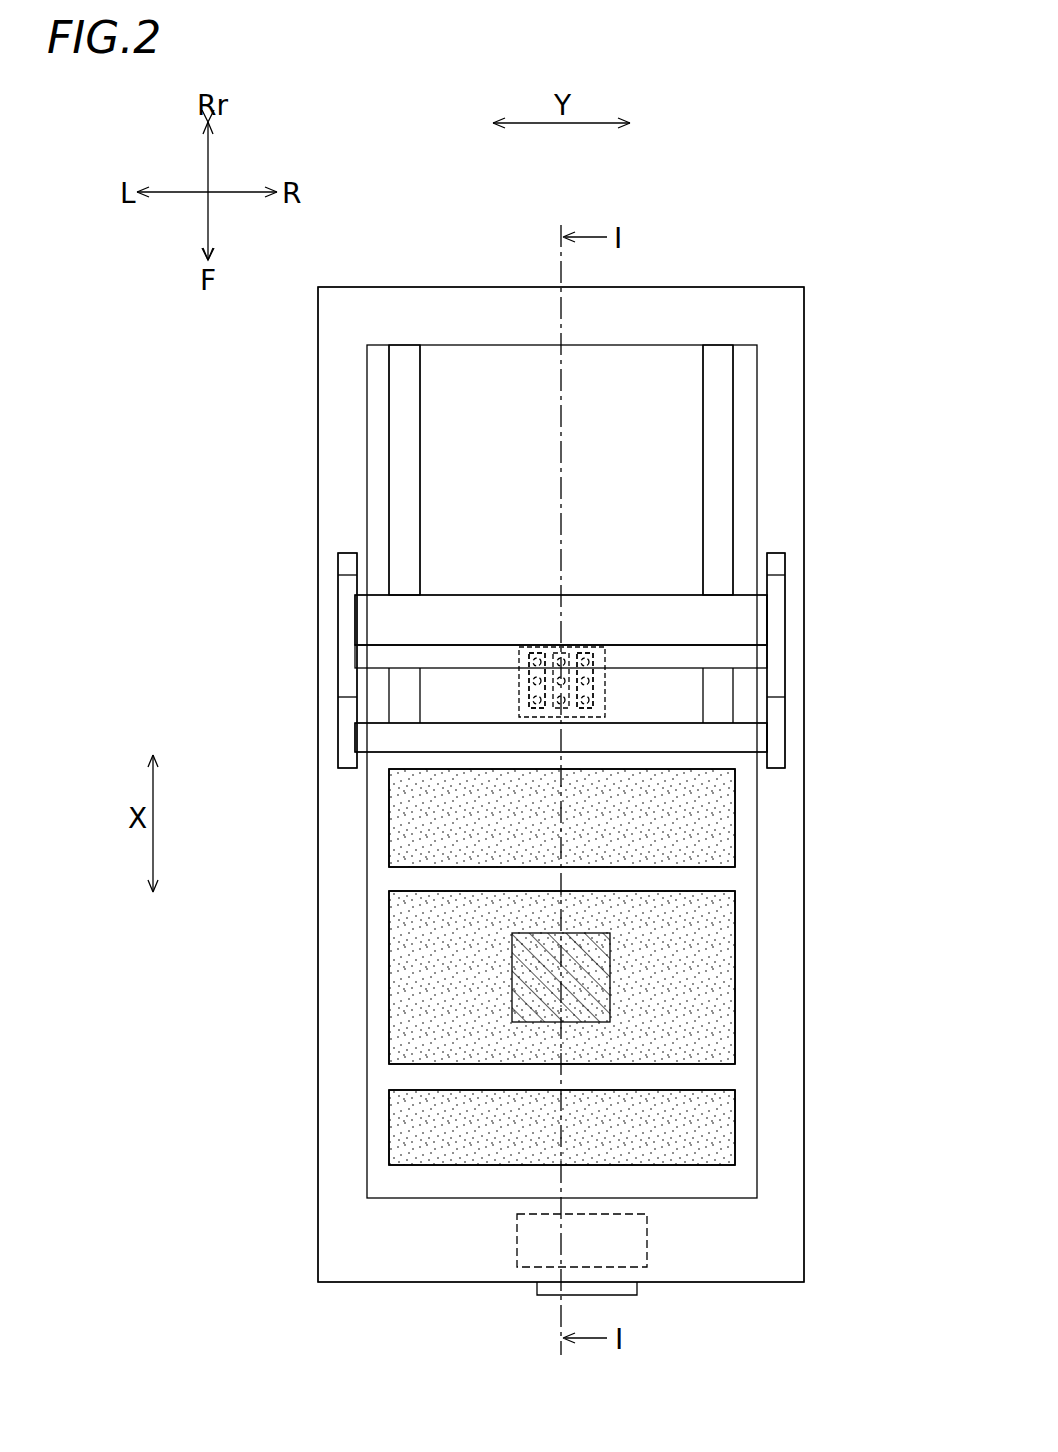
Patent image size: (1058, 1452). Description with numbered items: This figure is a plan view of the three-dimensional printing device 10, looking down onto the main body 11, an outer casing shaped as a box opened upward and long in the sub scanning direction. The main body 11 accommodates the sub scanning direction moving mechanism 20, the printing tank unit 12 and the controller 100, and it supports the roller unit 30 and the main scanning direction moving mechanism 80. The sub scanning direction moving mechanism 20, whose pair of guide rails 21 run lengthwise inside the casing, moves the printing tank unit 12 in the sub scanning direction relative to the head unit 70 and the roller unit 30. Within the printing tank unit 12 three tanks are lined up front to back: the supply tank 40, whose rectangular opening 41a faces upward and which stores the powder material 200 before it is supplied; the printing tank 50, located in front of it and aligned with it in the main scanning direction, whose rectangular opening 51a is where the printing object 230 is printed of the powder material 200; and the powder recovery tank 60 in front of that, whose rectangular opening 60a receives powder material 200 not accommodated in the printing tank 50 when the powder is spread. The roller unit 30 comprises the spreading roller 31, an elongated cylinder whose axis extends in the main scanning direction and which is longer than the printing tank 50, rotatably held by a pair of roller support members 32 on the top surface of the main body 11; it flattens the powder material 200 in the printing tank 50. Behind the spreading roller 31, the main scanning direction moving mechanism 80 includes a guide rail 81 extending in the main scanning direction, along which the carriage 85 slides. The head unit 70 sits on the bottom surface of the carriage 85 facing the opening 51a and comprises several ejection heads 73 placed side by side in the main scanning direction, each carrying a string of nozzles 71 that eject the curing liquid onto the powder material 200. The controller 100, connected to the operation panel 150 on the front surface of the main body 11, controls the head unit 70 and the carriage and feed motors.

The three-dimensional printing device 10 is at (819, 229).
The main body 11 is at (313, 1211).
The printing tank unit 12 is at (365, 1150).
The sub scanning direction moving mechanism 20 is at (721, 256).
The guide rails 21 is at (420, 371).
The roller unit 30 is at (778, 705).
The spreading roller 31 is at (378, 735).
The roller support members 32 is at (337, 748).
The supply tank 40 is at (733, 812).
The opening 41a is at (726, 777).
The printing tank 50 is at (733, 948).
The opening 51a is at (726, 896).
The powder recovery tank 60 is at (712, 1170).
The opening 60a is at (726, 1044).
The head unit 70 is at (602, 683).
The nozzles 71 is at (586, 658).
The ejection heads 73 is at (584, 660).
The main scanning direction moving mechanism 80 is at (400, 578).
The guide rail 81 is at (370, 613).
The carriage 85 is at (518, 683).
The controller 100 is at (517, 1239).
The operation panel 150 is at (547, 1297).
The powder material 200 is at (400, 828).
The printing object 230 is at (500, 982).